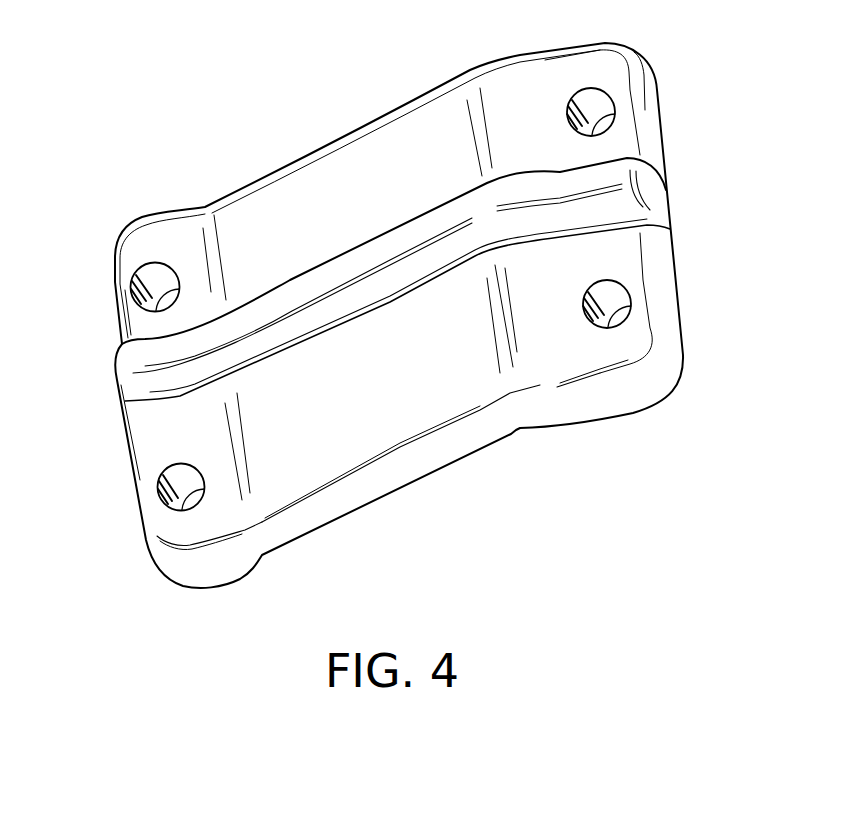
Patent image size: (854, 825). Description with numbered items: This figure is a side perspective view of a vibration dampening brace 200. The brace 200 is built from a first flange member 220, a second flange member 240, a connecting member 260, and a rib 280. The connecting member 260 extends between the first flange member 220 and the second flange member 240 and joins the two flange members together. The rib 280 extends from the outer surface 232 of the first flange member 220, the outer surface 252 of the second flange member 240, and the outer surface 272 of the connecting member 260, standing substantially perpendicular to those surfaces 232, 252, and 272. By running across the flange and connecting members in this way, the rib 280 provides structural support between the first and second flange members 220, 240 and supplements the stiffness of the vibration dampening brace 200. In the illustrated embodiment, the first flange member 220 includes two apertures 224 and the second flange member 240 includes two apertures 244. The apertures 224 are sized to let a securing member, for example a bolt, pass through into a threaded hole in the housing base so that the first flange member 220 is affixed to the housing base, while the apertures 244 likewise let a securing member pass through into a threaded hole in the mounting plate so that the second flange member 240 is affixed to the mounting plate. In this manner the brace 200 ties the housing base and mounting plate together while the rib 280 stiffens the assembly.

The vibration dampening brace 200 is at (165, 119).
The first flange member 220 is at (612, 250).
The apertures 224 is at (586, 110).
The outer surface 232 is at (554, 103).
The second flange member 240 is at (163, 433).
The apertures 244 is at (133, 291).
The outer surface 252 is at (155, 248).
The connecting member 260 is at (357, 420).
The outer surface 272 is at (407, 146).
The rib 280 is at (338, 278).